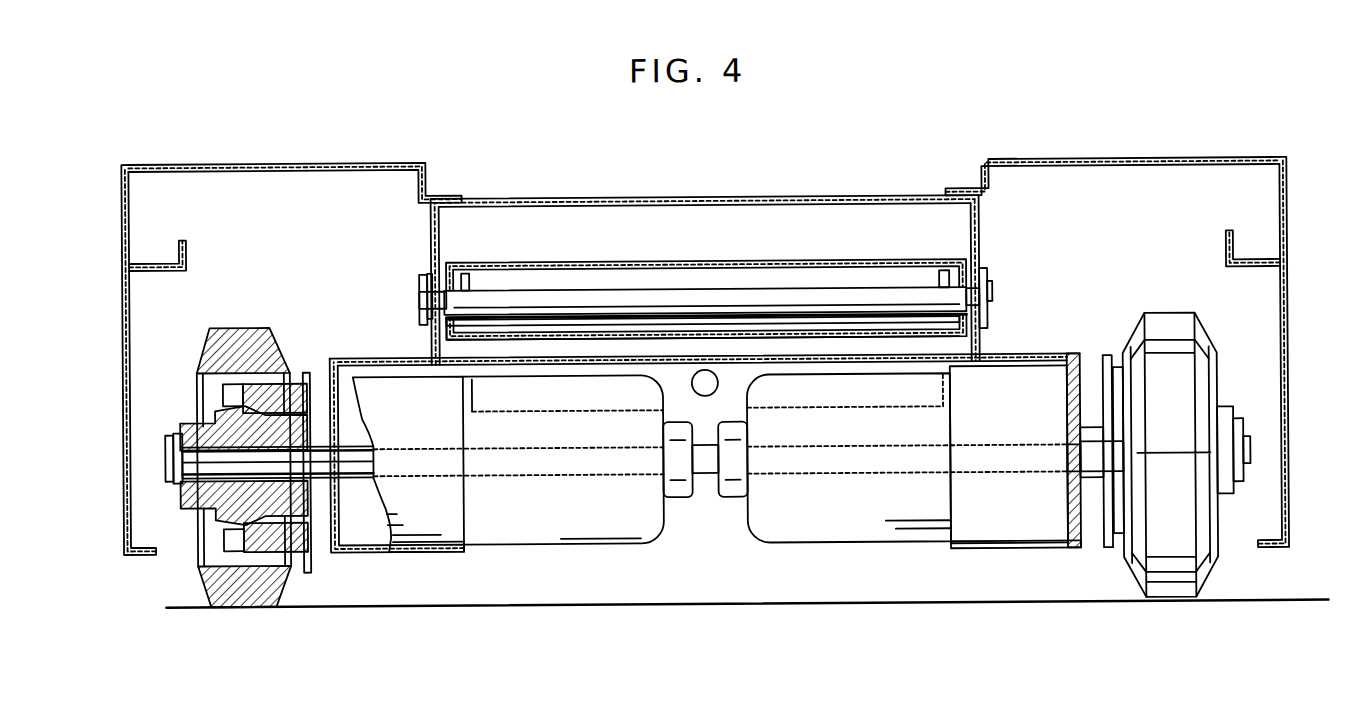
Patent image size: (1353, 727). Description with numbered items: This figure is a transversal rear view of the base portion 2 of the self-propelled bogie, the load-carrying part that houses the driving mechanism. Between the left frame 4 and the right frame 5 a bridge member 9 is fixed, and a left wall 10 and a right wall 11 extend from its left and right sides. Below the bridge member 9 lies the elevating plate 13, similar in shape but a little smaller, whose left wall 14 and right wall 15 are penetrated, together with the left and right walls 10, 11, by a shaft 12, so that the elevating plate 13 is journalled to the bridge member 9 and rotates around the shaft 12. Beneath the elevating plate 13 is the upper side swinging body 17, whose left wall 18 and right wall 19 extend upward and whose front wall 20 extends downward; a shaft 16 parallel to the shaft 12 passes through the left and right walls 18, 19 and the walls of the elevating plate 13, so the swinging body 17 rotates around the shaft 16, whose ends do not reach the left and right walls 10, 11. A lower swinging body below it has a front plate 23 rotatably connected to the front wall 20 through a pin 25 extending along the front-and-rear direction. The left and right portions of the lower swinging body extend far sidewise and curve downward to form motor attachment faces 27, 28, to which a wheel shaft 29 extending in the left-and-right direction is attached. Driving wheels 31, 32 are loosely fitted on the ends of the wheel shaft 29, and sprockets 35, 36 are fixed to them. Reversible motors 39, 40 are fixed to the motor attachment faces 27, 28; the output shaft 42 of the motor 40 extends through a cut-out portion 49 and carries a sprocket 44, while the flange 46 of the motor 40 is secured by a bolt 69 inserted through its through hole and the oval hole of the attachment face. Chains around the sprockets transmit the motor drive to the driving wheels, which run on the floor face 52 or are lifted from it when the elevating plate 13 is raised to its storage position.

The base portion 2 is at (1035, 155).
The left frame 4 is at (124, 278).
The right frame 5 is at (1289, 192).
The bridge member 9 is at (803, 264).
The left wall 10 is at (432, 232).
The right wall 11 is at (981, 213).
The shaft 12 is at (420, 295).
The elevating plate 13 is at (617, 263).
The left wall 14 is at (447, 337).
The right wall 15 is at (985, 328).
The shaft 16 is at (887, 290).
The upper side swinging body 17 is at (553, 335).
The left wall 18 is at (470, 280).
The right wall 19 is at (945, 288).
The front wall 20 is at (843, 343).
The front plate 23 is at (762, 372).
The pin 25 is at (703, 370).
The motor attachment face 27 is at (360, 548).
The motor attachment face 28 is at (1090, 440).
The wheel shaft 29 is at (165, 456).
The driving wheel 31 is at (253, 606).
The driving wheel 32 is at (1205, 342).
The sprocket 35 is at (310, 380).
The sprocket 36 is at (1103, 546).
The motor 39 is at (536, 548).
The motor 40 is at (825, 546).
The output shaft 42 is at (1075, 462).
The sprocket 44 is at (1075, 420).
The flange 46 is at (1070, 549).
The cut-out portion 49 is at (1080, 546).
The floor face 52 is at (915, 605).
The bolt 69 is at (1082, 420).